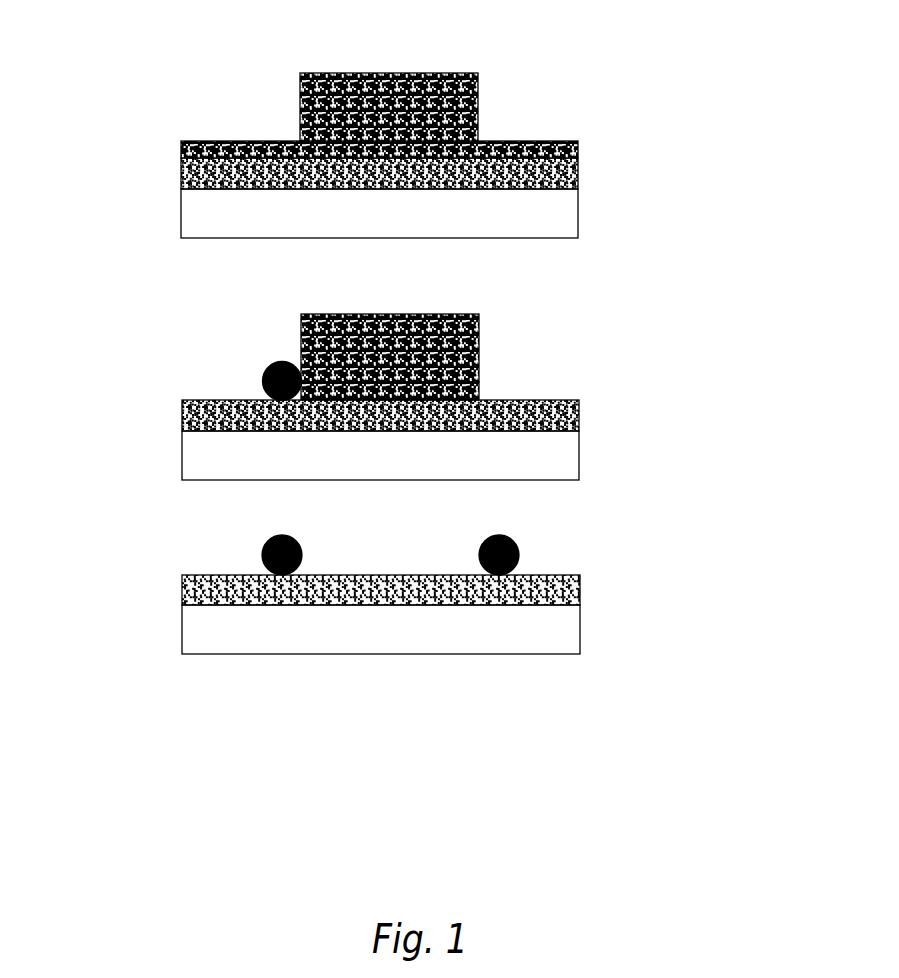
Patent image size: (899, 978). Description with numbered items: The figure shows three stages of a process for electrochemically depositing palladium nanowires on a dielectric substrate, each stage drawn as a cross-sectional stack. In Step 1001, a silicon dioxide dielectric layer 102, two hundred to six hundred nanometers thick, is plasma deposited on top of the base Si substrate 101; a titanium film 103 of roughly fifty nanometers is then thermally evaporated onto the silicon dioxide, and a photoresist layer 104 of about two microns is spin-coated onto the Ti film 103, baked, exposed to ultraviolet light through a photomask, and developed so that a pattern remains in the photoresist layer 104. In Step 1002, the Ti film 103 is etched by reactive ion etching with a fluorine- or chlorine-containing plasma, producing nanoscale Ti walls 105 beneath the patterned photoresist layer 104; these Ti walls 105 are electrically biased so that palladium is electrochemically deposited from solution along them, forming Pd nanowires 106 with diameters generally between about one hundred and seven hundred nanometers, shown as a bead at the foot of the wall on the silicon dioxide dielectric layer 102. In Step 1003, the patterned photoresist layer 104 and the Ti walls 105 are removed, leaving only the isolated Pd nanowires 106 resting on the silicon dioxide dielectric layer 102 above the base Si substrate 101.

The base Si substrate 101 is at (578, 225).
The silicon dioxide dielectric substrate 102 is at (578, 174).
The Ti film 103 is at (578, 142).
The photoresist layer 104 is at (478, 89).
The Ti walls 105 is at (479, 397).
The Pd nanowires 106 is at (262, 377).
The Step 1001 is at (301, 155).
The Step 1002 is at (302, 397).
The Step 1003 is at (302, 594).